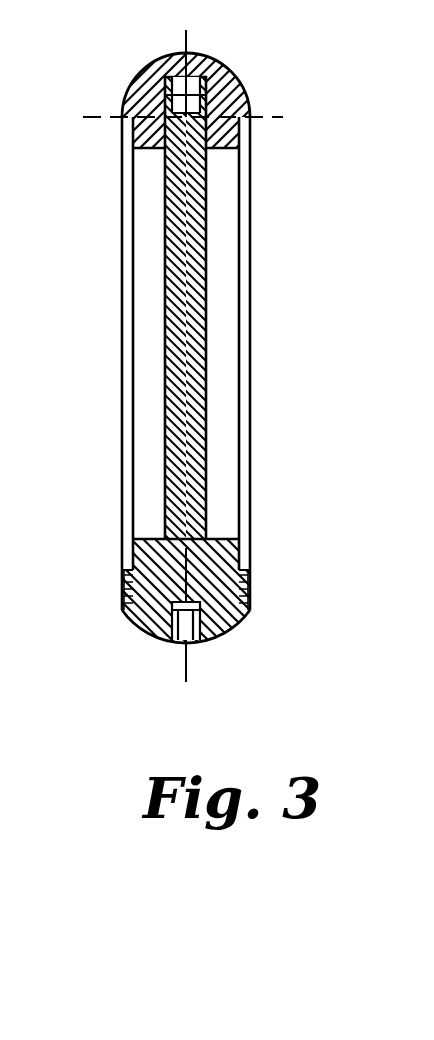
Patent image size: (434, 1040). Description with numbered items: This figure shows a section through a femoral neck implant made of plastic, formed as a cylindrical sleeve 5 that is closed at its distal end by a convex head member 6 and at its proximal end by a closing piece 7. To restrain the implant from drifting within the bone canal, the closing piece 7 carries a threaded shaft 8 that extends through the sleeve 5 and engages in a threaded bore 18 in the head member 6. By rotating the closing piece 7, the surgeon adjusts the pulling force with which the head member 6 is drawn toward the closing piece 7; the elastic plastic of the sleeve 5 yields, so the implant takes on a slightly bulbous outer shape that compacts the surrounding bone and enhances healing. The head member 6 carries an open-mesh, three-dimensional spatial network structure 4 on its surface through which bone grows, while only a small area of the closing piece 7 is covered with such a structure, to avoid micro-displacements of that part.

The open-mesh, three-dimensional spatial network structure 4 is at (253, 597).
The cylindrical sleeve 5 is at (251, 181).
The convex head member 6 is at (236, 90).
The closing piece 7 is at (230, 618).
The threaded shaft 8 is at (207, 404).
The threaded bore 18 is at (170, 98).